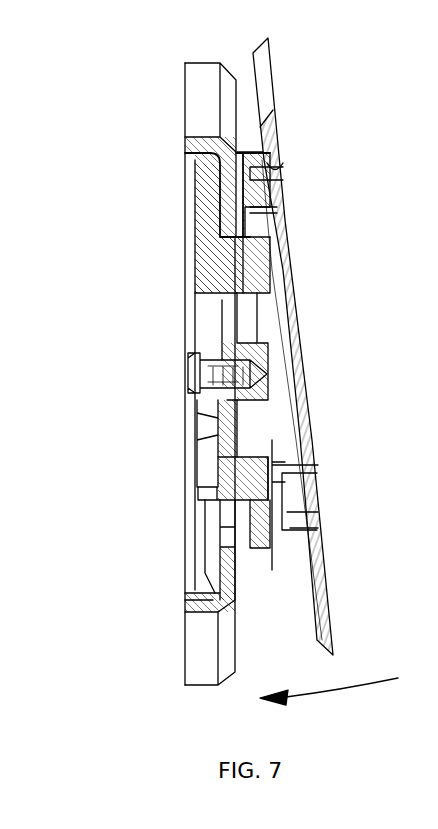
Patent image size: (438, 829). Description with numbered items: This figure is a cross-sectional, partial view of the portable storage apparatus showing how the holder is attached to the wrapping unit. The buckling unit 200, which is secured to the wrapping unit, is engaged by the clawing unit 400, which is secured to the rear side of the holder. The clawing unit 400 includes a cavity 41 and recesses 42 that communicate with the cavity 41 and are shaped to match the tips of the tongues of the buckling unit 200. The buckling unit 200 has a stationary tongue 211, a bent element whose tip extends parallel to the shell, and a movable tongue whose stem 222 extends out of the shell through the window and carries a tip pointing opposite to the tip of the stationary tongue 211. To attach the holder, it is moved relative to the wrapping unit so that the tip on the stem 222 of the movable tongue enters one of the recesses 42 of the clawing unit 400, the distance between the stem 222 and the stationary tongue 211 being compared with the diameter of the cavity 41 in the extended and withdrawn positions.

The buckling unit 200 is at (155, 80).
The clawing unit 400 is at (293, 43).
The cavity 41 is at (290, 318).
The recesses 42 is at (273, 173).
The stem 222 is at (257, 257).
The stationary tongue 211 is at (260, 478).